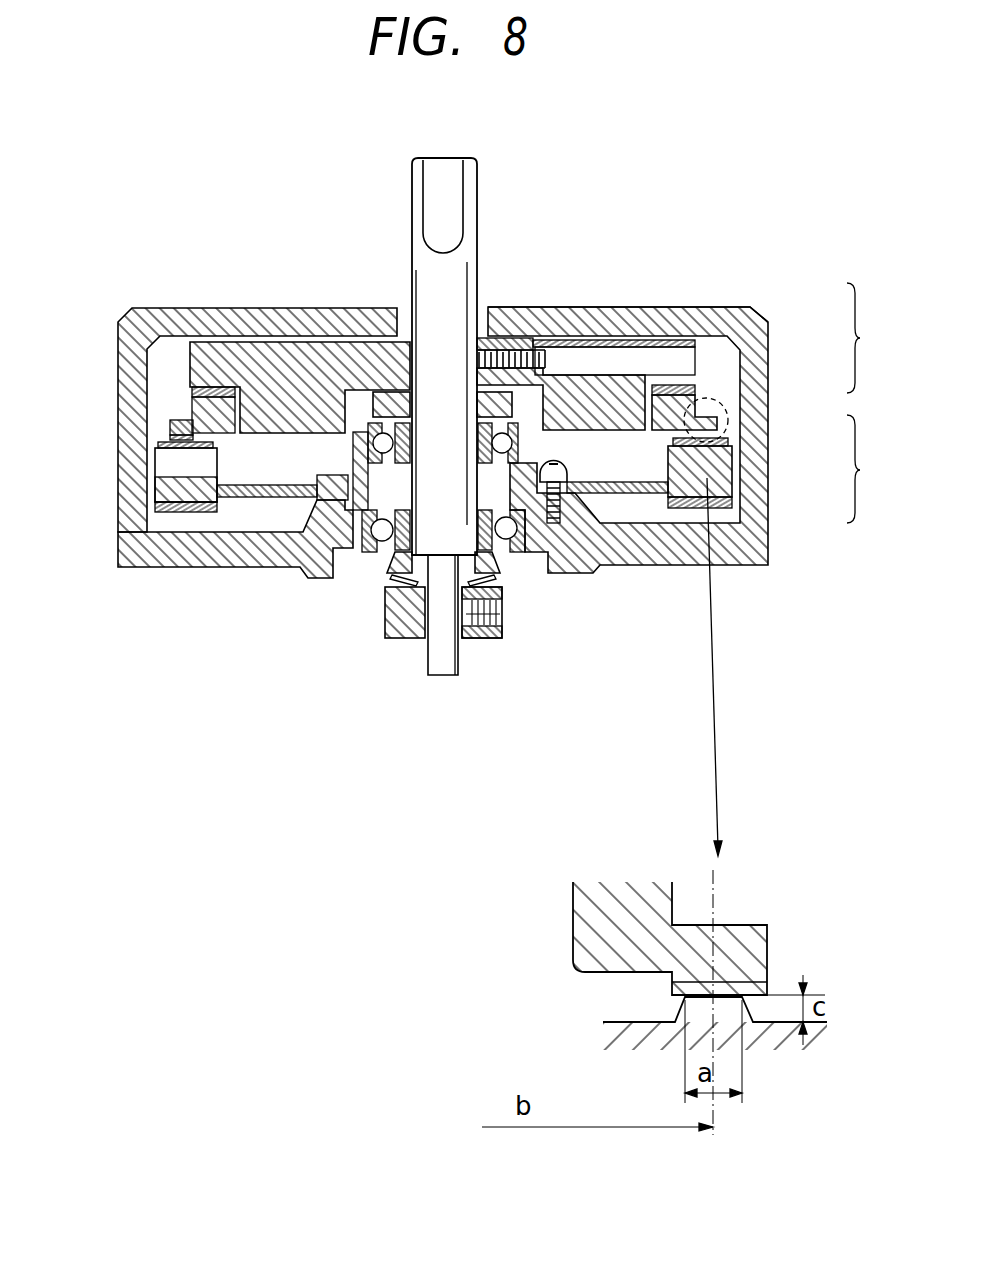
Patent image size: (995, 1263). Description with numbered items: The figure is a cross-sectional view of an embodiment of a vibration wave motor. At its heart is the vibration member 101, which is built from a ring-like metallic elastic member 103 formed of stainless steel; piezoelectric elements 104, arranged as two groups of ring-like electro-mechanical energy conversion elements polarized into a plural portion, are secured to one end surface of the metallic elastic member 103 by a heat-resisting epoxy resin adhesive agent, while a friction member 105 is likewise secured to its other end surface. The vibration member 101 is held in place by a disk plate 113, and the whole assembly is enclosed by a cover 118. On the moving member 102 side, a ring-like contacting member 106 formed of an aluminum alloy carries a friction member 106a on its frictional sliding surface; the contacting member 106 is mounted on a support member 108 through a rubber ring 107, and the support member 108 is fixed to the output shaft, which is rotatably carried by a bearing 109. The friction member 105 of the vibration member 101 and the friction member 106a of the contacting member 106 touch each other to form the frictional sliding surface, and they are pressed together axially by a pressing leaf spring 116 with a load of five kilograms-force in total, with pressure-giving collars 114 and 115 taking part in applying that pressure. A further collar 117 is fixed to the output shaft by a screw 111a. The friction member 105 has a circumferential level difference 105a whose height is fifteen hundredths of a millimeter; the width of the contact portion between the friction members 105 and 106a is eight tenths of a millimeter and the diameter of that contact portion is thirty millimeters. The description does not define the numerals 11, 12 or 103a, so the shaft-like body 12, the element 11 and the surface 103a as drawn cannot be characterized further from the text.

The spring 11 is at (545, 358).
The shaft 12 is at (468, 260).
The vibration member 101 is at (874, 469).
The moving member 102 is at (874, 338).
The metallic elastic member 103 is at (725, 472).
The magnet surface 103a is at (160, 462).
The piezoelectric elements 104 is at (727, 503).
The friction member 105 is at (712, 438).
The circumferential level difference 105a is at (668, 1003).
The contacting member 106 is at (717, 420).
The friction member 106a is at (768, 985).
The rubber ring 107 is at (692, 380).
The support member 108 is at (690, 346).
The bearing 109 is at (377, 423).
The screw 111a is at (493, 640).
The disk plate 113 is at (740, 566).
The pressure-giving collar 114 is at (393, 393).
The pressure-giving collar 115 is at (503, 562).
The pressing leaf spring 116 is at (492, 584).
The collar 117 is at (400, 640).
The cover 118 is at (690, 318).